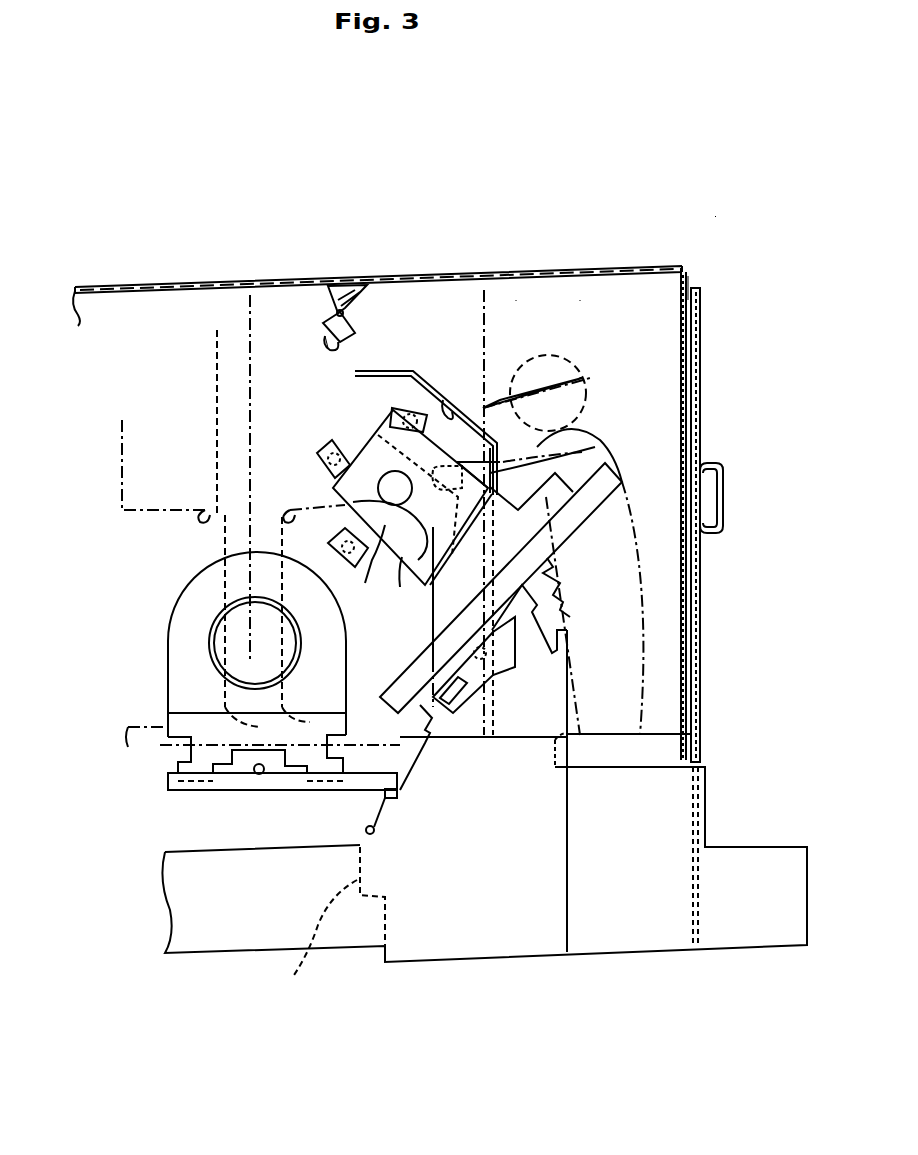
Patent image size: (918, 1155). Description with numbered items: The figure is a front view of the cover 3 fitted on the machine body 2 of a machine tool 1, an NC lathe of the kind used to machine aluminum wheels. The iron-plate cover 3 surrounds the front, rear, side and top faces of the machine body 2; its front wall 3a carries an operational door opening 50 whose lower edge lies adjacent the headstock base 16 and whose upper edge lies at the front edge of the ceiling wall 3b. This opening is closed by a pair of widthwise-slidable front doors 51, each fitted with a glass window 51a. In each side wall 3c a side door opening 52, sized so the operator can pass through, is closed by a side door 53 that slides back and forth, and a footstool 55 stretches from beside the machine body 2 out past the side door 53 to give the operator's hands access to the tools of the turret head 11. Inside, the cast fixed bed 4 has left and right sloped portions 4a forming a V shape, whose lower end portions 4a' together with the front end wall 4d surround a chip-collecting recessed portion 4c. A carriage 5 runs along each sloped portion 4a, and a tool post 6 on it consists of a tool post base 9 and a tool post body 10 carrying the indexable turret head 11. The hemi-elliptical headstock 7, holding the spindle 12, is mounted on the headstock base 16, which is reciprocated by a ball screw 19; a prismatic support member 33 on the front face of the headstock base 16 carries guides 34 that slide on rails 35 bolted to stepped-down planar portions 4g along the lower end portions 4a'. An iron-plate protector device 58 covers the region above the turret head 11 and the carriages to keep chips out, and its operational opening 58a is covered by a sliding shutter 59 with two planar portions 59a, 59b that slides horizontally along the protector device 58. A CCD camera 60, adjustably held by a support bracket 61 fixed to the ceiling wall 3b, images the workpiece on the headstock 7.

The machine tool 1 is at (714, 215).
The machine body 2 is at (135, 590).
The cover 3 is at (632, 256).
The front wall 3a is at (580, 302).
The ceiling wall 3b is at (516, 302).
The side wall 3c is at (688, 278).
The fixed bed 4 is at (545, 950).
The sloped portion 4a is at (474, 704).
The lower end portion 4a' is at (403, 885).
The recessed portion 4c is at (300, 968).
The front end wall 4d is at (362, 935).
The planar portion 4g is at (398, 795).
The carriage 5 is at (580, 535).
The tool post 6 is at (342, 605).
The headstock 7 is at (165, 652).
The tool post base 9 is at (432, 600).
The tool post body 10 is at (402, 575).
The turret head 11 is at (362, 560).
The spindle 12 is at (218, 628).
The headstock base 16 is at (168, 718).
The ball screw 19 is at (262, 777).
The support member 33 is at (228, 792).
The guide 34 is at (378, 792).
The rail 35 is at (390, 800).
The operational door opening 50 is at (475, 320).
The front door 51 is at (273, 307).
The window 51a is at (248, 497).
The side door opening 52 is at (680, 343).
The side door 53 is at (703, 405).
The footstool 55 is at (755, 847).
The protector device 58 is at (413, 372).
The operational opening 58a is at (452, 410).
The sliding shutter 59 is at (470, 404).
The planar portion 59a is at (488, 405).
The planar portion 59b is at (590, 428).
The CCD camera 60 is at (318, 322).
The support bracket 61 is at (395, 290).